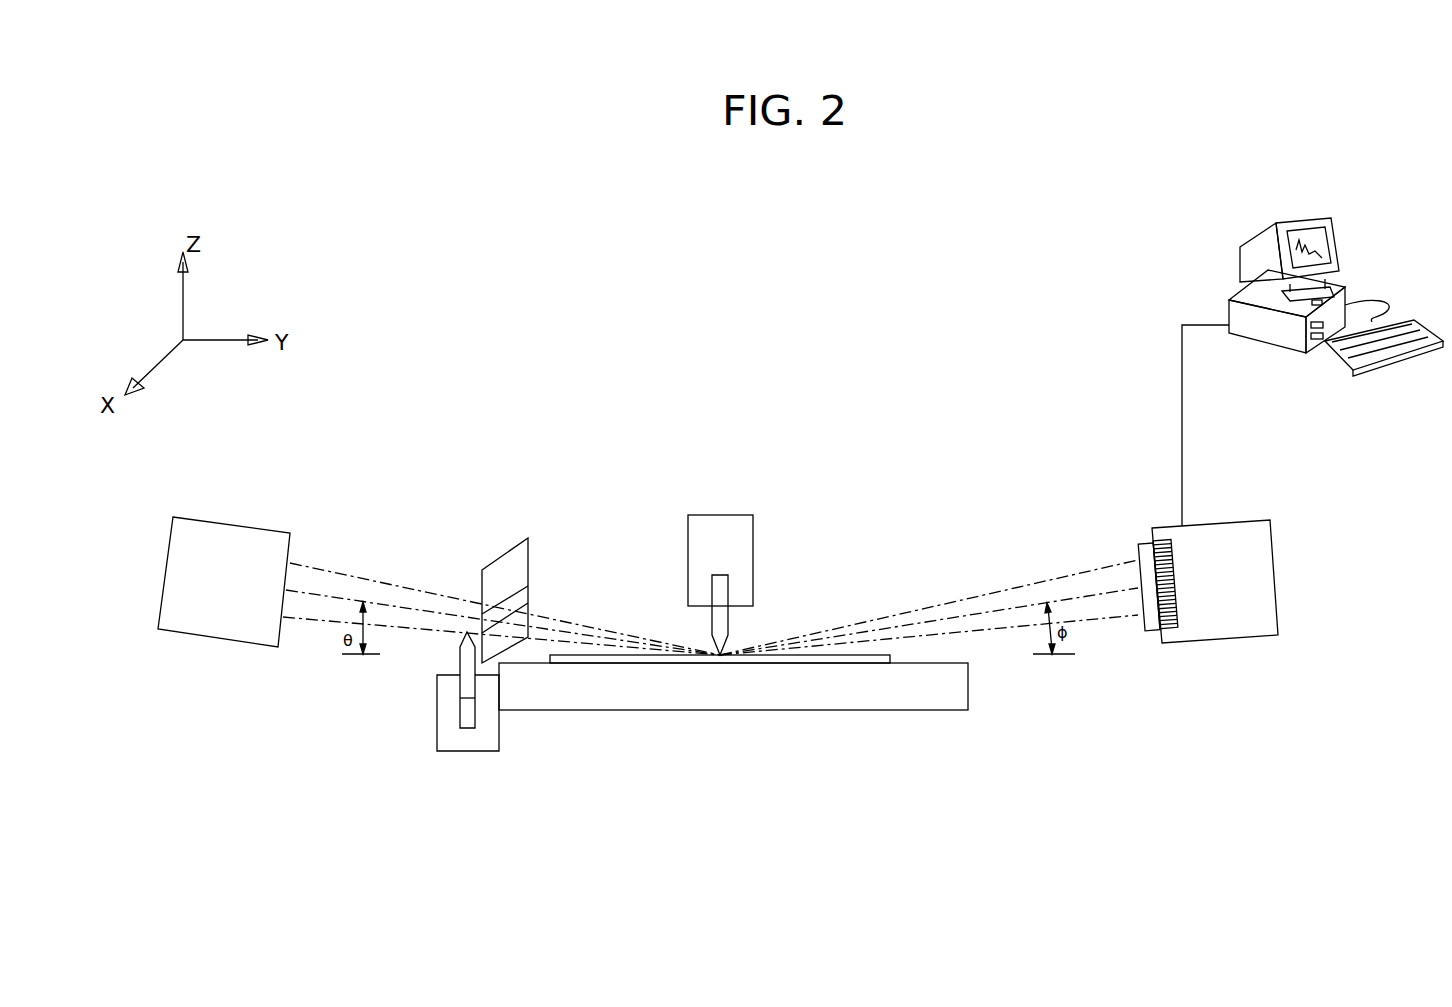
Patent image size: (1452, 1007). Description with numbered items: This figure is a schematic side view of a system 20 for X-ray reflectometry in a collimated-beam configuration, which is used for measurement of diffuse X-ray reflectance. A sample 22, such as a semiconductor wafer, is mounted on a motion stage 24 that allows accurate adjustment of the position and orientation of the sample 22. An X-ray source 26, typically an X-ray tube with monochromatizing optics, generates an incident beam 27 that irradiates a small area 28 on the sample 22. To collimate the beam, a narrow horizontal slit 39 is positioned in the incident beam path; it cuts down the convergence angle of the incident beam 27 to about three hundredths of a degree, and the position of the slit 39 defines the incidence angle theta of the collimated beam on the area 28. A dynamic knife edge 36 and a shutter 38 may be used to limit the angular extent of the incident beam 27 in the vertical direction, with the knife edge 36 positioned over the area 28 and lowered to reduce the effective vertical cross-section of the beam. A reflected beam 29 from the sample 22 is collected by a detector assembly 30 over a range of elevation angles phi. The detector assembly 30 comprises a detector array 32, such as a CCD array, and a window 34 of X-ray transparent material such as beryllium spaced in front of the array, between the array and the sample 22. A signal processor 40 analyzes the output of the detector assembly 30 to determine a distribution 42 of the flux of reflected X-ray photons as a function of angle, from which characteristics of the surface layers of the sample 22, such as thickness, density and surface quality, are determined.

The system 20 is at (455, 378).
The sample 22 is at (864, 655).
The motion stage 24 is at (969, 683).
The X-ray source 26 is at (237, 518).
The incident beam 27 is at (358, 577).
The area 28 is at (720, 656).
The reflected beam 29 is at (1010, 587).
The detector assembly 30 is at (1279, 552).
The detector array 32 is at (1172, 580).
The window 34 is at (1140, 545).
The dynamic knife edge 36 is at (720, 628).
The shutter 38 is at (463, 638).
The slit 39 is at (510, 540).
The signal processor 40 is at (1229, 298).
The distribution 42 is at (1300, 240).